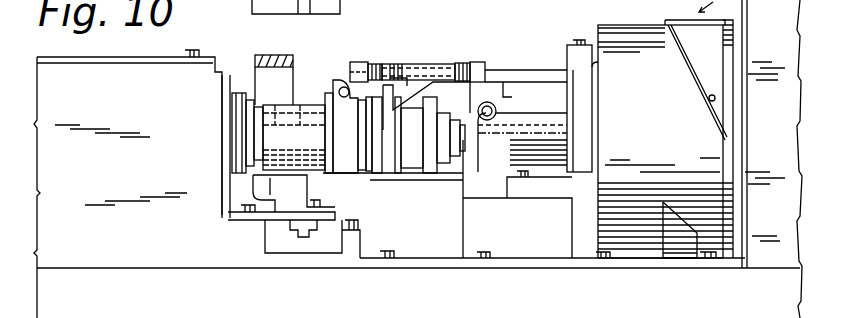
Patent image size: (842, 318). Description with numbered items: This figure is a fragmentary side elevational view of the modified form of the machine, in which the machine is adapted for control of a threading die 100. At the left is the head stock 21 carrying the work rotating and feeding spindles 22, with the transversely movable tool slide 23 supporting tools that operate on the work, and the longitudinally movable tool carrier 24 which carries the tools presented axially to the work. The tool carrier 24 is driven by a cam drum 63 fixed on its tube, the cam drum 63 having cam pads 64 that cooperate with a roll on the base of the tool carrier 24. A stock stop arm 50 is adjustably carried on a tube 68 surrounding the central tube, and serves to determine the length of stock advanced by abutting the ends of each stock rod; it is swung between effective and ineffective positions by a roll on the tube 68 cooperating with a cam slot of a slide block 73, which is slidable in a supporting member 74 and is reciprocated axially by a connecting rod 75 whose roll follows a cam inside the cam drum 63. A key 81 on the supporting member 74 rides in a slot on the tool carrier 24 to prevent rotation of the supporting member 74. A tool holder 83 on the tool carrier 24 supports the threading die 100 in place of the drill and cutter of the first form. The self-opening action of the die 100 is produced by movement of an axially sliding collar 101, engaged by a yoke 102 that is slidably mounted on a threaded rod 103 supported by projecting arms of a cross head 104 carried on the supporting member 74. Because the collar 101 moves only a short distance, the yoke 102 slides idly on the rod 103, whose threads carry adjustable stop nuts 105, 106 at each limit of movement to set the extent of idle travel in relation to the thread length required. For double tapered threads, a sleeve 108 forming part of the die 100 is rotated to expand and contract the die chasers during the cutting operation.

The head stock 21 is at (79, 41).
The work rotating and feeding spindles 22 is at (245, 142).
The transversely movable tool slide 23 is at (330, 204).
The longitudinally movable tool carrier 24 is at (460, 230).
The stock stop arm 50 is at (343, 86).
The cam drum 63 is at (638, 24).
The cam pads 64 is at (678, 253).
The tube 68 is at (297, 112).
The slide block 73 is at (508, 96).
The supporting member 74 is at (452, 168).
The connecting rod 75 is at (531, 54).
The key 81 is at (421, 178).
The tool holder 83 is at (502, 136).
The threading die 100 is at (381, 183).
The axially sliding collar 101 is at (385, 158).
The yoke 102 is at (398, 90).
The threaded rod 103 is at (407, 78).
The cross head 104 is at (475, 63).
The stop nut 105 is at (378, 50).
The stop nut 106 is at (458, 62).
The sleeve 108 is at (443, 98).